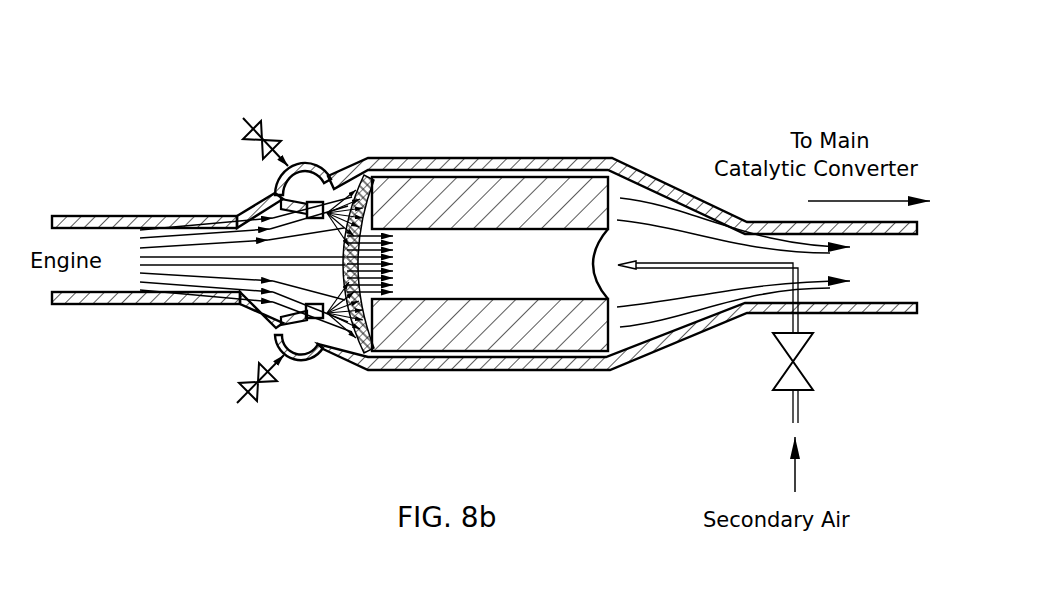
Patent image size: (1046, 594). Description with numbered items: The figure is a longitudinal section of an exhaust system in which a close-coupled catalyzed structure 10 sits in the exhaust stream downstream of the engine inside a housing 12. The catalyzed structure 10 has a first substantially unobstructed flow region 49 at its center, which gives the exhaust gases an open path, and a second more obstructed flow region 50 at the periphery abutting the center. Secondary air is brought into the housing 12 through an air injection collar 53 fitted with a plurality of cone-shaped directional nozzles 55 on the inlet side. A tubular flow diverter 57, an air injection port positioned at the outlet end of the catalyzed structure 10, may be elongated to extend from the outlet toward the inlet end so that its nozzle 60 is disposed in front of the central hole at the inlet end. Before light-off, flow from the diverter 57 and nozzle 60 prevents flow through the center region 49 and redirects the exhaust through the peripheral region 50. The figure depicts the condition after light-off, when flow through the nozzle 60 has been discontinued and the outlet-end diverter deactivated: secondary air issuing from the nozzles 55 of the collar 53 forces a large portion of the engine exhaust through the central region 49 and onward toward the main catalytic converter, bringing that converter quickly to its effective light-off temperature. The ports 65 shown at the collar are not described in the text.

The close-coupled catalyzed structure 10 is at (443, 263).
The housing 12 is at (575, 368).
The first substantially unobstructed flow region 49 is at (553, 276).
The second more obstructed flow region 50 is at (463, 182).
The air injection collar 53 is at (273, 338).
The cone-shaped directional nozzles 55 is at (312, 312).
The flow diverter 57 is at (678, 270).
The nozzle 60 is at (625, 263).
The injection port 65 is at (333, 213).